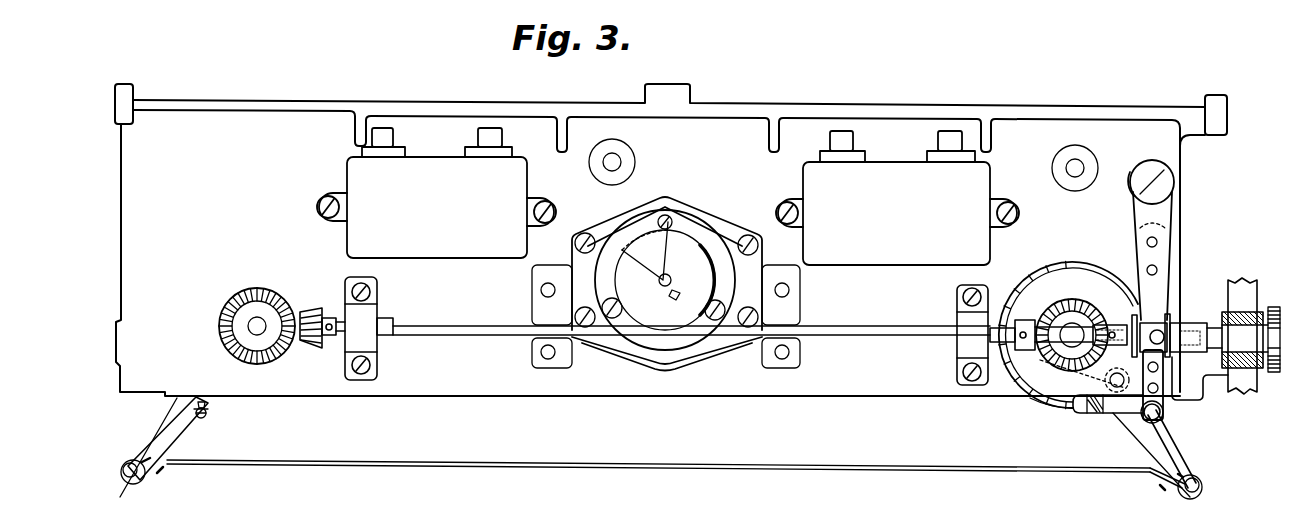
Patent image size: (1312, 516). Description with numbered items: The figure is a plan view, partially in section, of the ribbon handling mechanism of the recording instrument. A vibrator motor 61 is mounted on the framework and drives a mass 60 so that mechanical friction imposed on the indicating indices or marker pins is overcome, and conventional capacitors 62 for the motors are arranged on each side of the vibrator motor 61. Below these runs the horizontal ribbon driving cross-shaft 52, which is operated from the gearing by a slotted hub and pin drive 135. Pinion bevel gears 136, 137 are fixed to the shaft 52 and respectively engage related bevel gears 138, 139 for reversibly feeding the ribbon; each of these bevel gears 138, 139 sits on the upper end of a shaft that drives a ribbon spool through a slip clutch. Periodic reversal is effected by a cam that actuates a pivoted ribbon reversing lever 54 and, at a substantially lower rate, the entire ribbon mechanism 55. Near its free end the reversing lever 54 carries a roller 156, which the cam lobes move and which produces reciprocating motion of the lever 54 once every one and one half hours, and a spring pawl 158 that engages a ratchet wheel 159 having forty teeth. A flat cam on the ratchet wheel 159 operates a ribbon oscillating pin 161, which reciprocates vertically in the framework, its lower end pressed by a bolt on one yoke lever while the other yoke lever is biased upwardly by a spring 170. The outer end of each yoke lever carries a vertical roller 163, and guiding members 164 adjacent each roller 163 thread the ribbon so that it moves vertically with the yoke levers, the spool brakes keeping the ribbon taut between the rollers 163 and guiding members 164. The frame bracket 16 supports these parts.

The frame bracket 16 is at (983, 318).
The horizontal cross-shaft 52 is at (866, 338).
The ribbon reversing lever 54 is at (1162, 403).
The ribbon mechanism 55 is at (1076, 428).
The mass 60 is at (668, 262).
The vibrator motor 61 is at (710, 232).
The capacitors 62 is at (447, 243).
The slotted hub and pin drive 135 is at (1192, 311).
The pinion bevel gear 136 is at (1028, 292).
The pinion bevel gear 137 is at (311, 311).
The bevel gear 138 is at (1078, 299).
The bevel gear 139 is at (254, 288).
The roller 156 is at (1150, 425).
The spring pawl 158 is at (1110, 414).
The ratchet wheel 159 is at (1036, 398).
The ribbon oscillating pin 161 is at (1100, 385).
The vertical roller 163 is at (127, 481).
The guiding members 164 is at (155, 457).
The spring 170 is at (206, 417).